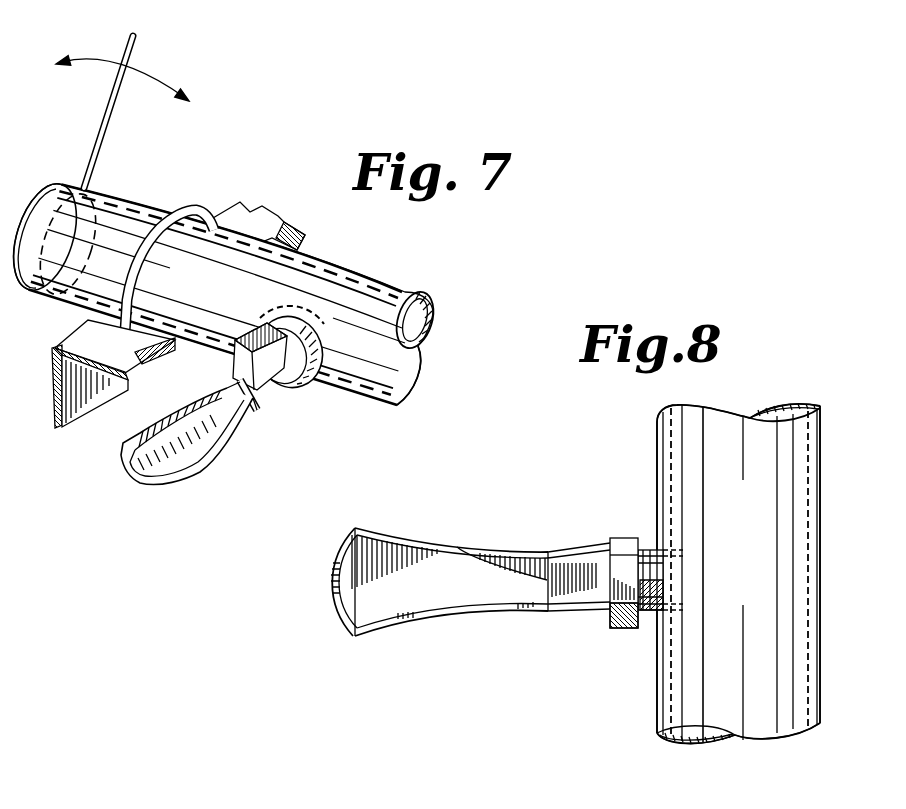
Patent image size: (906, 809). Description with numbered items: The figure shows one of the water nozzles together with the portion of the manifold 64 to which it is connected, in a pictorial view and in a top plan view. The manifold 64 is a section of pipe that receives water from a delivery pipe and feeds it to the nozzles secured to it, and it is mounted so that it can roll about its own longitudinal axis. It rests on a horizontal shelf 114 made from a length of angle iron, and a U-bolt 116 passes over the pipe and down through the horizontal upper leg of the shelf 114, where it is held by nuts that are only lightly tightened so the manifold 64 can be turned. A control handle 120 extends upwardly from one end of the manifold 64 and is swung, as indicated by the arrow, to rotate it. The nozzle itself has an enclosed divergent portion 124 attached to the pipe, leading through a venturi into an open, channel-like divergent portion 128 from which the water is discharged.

In FIG. 7, the manifold 64 is at (369, 278).
In FIG. 8, the manifold 64 is at (766, 520).
In FIG. 7, the horizontal shelf 114 is at (283, 223).
In FIG. 7, the U-bolt 116 is at (180, 205).
In FIG. 7, the control handle 120 is at (140, 52).
In FIG. 8, the control handle 120 is at (457, 547).
In FIG. 7, the enclosed divergent portion 124 is at (238, 332).
In FIG. 8, the enclosed divergent portion 124 is at (612, 538).
In FIG. 7, the open divergent portion 128 is at (234, 452).
In FIG. 8, the open divergent portion 128 is at (370, 527).